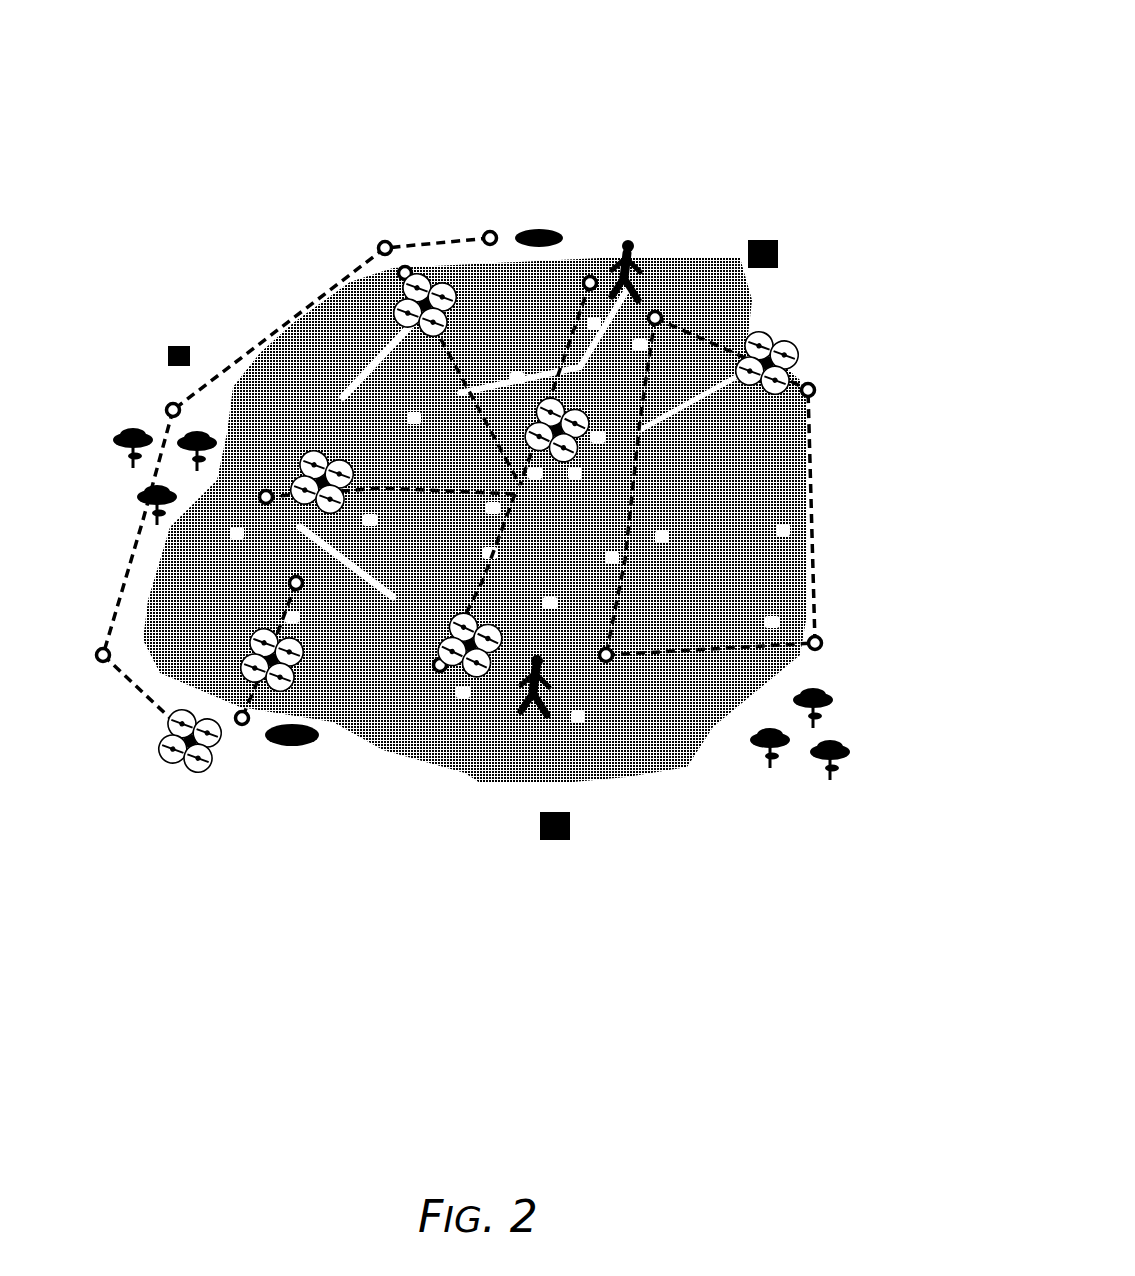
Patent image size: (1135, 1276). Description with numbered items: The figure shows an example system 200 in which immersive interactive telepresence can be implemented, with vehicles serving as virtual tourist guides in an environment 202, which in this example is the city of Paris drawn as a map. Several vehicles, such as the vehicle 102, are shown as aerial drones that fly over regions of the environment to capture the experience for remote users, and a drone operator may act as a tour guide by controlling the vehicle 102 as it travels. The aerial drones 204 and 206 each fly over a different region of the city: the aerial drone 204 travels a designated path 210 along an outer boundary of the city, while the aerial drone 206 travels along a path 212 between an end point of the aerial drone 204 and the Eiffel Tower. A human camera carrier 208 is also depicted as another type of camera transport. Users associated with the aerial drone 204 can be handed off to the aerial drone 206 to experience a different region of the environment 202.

The system 200 is at (722, 78).
The environment 202 is at (343, 325).
The vehicle 102 is at (778, 350).
The aerial drone 204 is at (172, 757).
The aerial drone 206 is at (302, 680).
The human camera carrier 208 is at (540, 718).
The designated path 210 is at (125, 672).
The path 212 is at (255, 708).